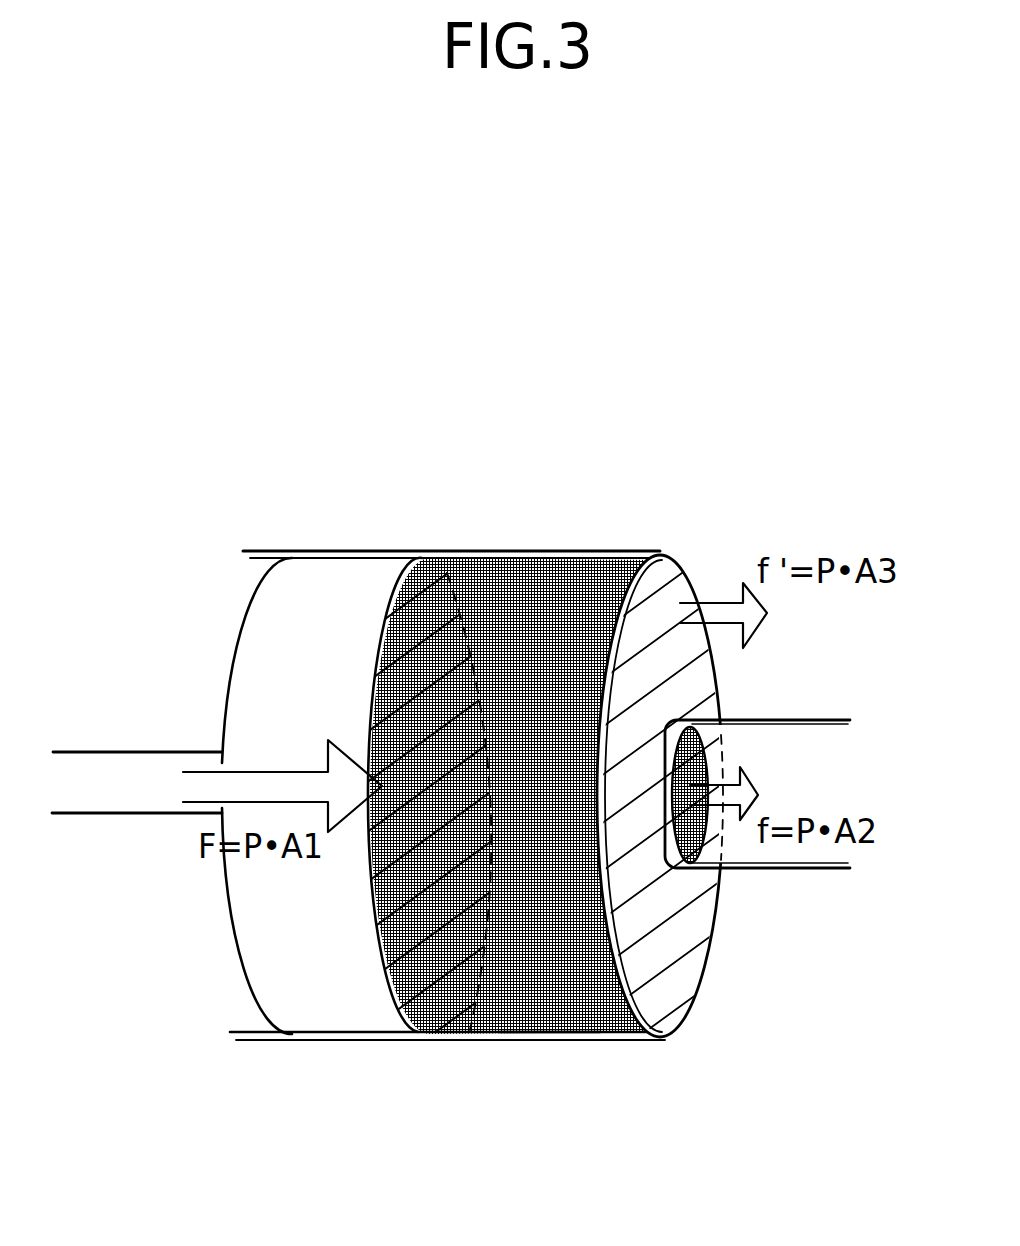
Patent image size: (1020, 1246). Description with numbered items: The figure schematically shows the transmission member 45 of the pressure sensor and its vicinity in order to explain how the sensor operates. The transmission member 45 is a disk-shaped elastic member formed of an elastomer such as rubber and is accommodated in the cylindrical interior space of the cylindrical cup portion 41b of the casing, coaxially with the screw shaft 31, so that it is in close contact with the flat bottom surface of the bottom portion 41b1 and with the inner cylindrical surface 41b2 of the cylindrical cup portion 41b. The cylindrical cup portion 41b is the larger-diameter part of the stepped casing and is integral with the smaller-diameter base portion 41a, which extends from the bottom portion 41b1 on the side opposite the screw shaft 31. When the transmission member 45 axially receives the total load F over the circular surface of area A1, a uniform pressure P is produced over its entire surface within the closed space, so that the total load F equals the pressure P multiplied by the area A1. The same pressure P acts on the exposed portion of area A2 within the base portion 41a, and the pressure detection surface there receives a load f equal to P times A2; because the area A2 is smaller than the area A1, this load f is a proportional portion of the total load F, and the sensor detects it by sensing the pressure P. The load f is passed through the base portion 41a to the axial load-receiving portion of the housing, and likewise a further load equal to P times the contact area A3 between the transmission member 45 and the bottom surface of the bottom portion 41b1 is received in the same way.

The screw shaft 31 is at (103, 798).
The base portion 41a is at (720, 896).
The cylindrical cup portion 41b is at (377, 1042).
The bottom portion 41b1 is at (693, 812).
The inner cylindrical surface 41b2 is at (562, 1022).
The transmission member 45 is at (473, 804).
The area of the circular surface A1 is at (420, 680).
The area of the exposed portion A2 is at (707, 853).
The area of contact with the bottom surface A3 is at (672, 574).